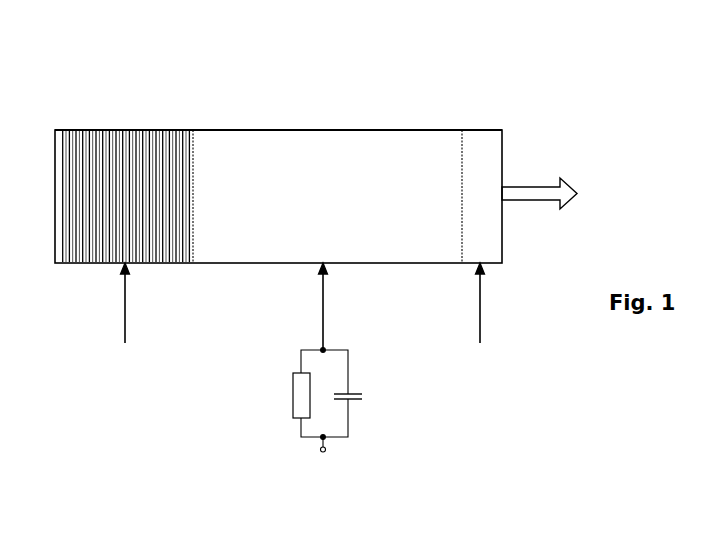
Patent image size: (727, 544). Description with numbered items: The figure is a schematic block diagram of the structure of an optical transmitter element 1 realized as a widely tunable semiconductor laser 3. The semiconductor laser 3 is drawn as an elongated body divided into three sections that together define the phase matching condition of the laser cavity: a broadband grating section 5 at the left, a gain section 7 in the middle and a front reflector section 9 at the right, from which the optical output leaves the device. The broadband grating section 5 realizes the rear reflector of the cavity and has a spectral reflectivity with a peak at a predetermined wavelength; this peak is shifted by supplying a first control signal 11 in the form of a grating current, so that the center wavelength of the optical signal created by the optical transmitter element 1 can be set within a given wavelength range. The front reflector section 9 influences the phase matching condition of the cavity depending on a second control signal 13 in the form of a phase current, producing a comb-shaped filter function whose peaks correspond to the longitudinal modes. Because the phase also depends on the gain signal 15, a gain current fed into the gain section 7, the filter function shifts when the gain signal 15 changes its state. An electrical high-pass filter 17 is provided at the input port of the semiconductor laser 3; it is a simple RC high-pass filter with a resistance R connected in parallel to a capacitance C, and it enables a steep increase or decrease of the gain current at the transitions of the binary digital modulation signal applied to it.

The optical transmitter element 1 is at (330, 50).
The semiconductor laser 3 is at (366, 124).
The broadband grating section 5 is at (117, 134).
The gain section 7 is at (302, 135).
The front reflector section 9 is at (480, 135).
The first control signal 11 is at (126, 317).
The second control signal 13 is at (479, 298).
The gain signal 15 is at (323, 300).
The electrical high-pass filter 17 is at (276, 375).